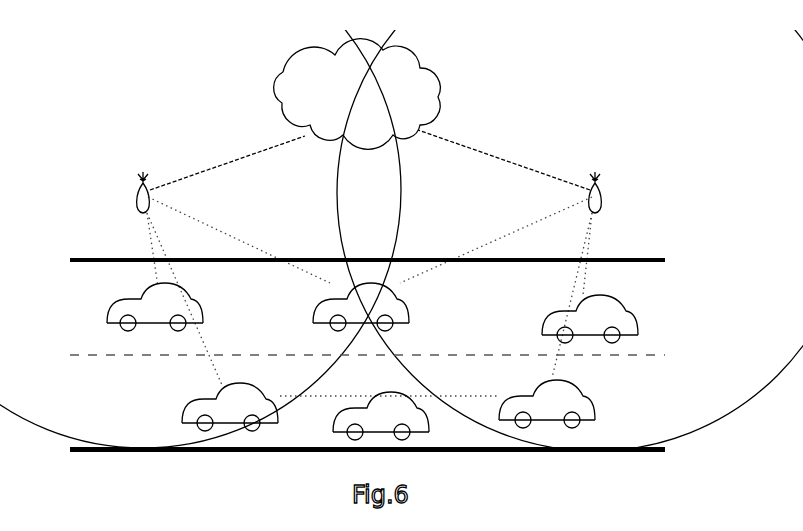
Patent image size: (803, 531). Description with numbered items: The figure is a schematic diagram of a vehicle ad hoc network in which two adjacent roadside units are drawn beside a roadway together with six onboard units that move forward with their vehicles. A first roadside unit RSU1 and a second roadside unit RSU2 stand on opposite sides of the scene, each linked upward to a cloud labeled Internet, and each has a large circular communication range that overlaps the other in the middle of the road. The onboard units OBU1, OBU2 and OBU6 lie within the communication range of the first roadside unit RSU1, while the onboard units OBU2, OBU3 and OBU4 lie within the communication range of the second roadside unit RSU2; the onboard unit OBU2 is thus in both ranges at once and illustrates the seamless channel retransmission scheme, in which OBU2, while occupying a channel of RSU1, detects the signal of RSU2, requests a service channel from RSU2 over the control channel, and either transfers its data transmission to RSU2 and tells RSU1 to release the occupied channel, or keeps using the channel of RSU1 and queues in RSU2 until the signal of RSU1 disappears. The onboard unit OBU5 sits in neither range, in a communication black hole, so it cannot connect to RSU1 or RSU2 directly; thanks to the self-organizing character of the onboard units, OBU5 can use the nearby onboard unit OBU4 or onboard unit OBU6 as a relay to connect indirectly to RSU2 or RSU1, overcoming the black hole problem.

The Internet cloud Internet is at (357, 94).
The first roadside unit RSU1 is at (614, 205).
The second roadside unit RSU2 is at (123, 205).
The onboard unit OBU1 is at (590, 319).
The onboard unit OBU2 is at (361, 307).
The onboard unit OBU3 is at (155, 307).
The onboard unit OBU4 is at (230, 407).
The onboard unit OBU5 is at (381, 416).
The onboard unit OBU6 is at (547, 404).